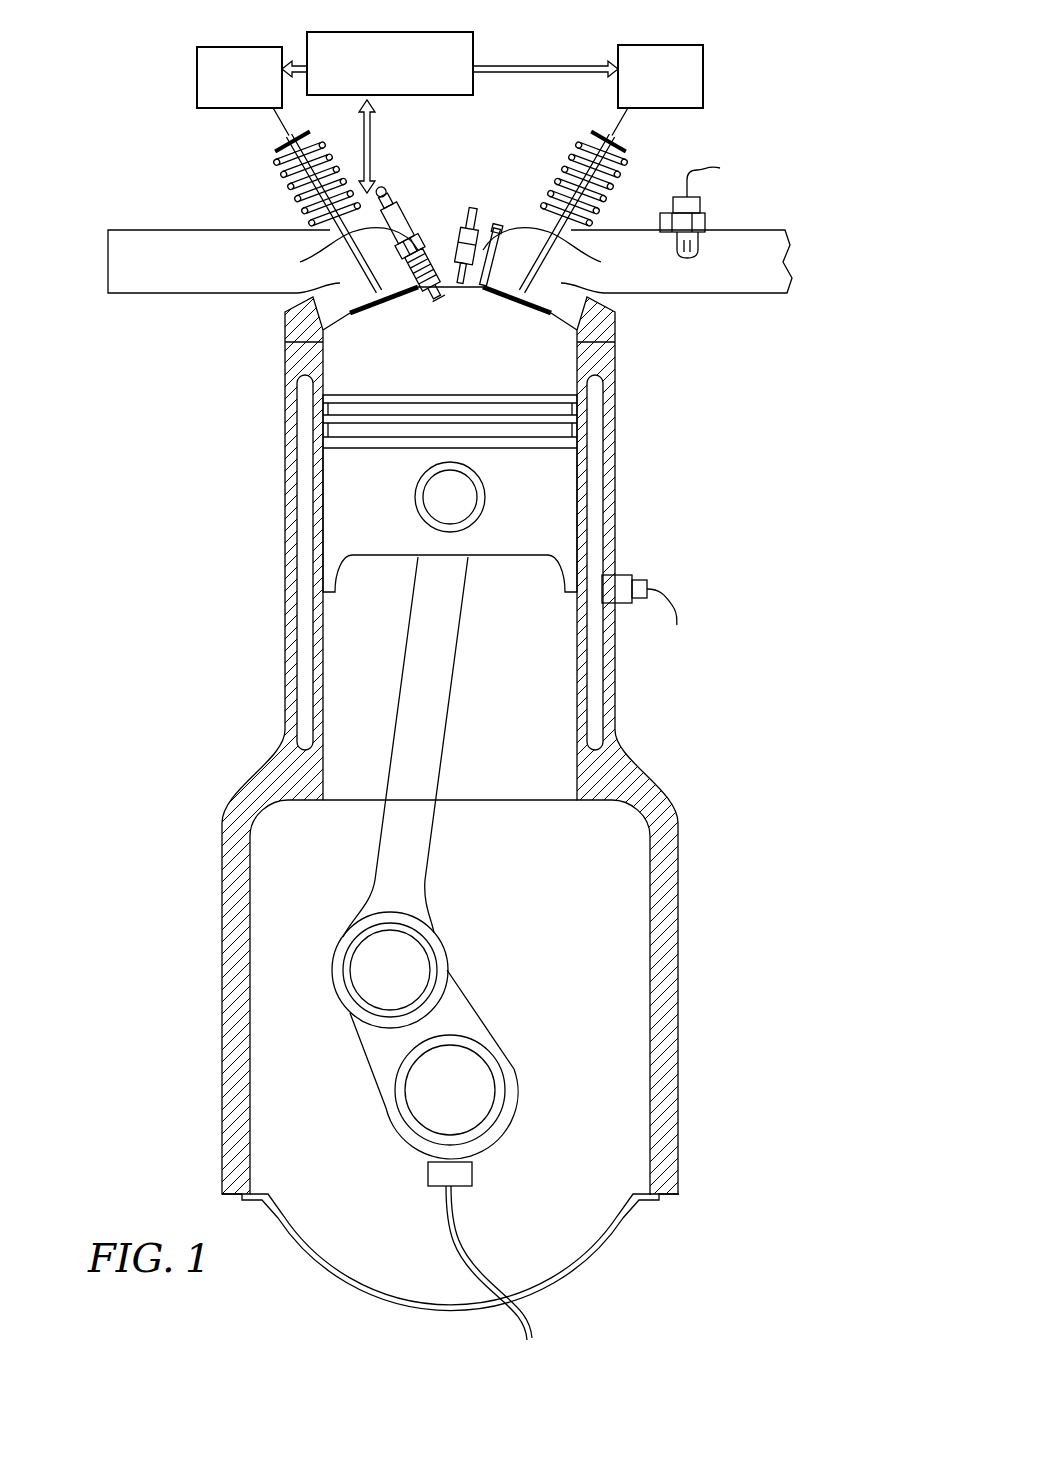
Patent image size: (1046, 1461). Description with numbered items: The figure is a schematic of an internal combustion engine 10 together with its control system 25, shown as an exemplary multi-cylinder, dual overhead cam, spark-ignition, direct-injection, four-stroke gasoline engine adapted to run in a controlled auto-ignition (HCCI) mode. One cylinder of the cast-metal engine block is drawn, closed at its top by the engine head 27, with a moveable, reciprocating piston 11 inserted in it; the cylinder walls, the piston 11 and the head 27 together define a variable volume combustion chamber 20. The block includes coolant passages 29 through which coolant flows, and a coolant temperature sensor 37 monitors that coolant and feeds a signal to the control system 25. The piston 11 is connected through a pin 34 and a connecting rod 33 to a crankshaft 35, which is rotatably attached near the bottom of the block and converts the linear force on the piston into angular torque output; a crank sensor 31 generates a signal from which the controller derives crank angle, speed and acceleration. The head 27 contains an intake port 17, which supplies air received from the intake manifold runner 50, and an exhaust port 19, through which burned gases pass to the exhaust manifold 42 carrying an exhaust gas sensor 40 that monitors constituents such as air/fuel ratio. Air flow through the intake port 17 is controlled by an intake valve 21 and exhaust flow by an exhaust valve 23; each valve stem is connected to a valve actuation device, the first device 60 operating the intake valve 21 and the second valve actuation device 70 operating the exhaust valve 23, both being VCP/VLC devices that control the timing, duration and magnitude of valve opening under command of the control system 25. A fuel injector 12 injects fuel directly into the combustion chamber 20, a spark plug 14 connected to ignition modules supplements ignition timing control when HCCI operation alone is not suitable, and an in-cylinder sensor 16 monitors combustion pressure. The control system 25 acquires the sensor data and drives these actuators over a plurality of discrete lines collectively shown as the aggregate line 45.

The internal combustion engine 10 is at (138, 432).
The piston 11 is at (545, 503).
The fuel injector 12 is at (466, 228).
The spark plug 14 is at (397, 210).
The in-cylinder sensor 16 is at (491, 236).
The intake port 17 is at (340, 283).
The exhaust port 19 is at (607, 310).
The combustion chamber 20 is at (347, 372).
The intake valve 21 is at (342, 250).
The exhaust valve 23 is at (550, 267).
The control system 25 is at (465, 44).
The engine head 27 is at (597, 330).
The coolant passages 29 is at (597, 430).
The crank sensor 31 is at (429, 1173).
The connecting rod 33 is at (427, 662).
The pin 34 is at (443, 497).
The crankshaft 35 is at (392, 1089).
The coolant temperature sensor 37 is at (640, 583).
The exhaust gas sensor 40 is at (705, 221).
The exhaust manifold 42 is at (777, 262).
The aggregate line 45 is at (372, 135).
The intake manifold runner 50 is at (182, 288).
The valve actuation device 60 is at (199, 57).
The second valve actuation device 70 is at (695, 60).